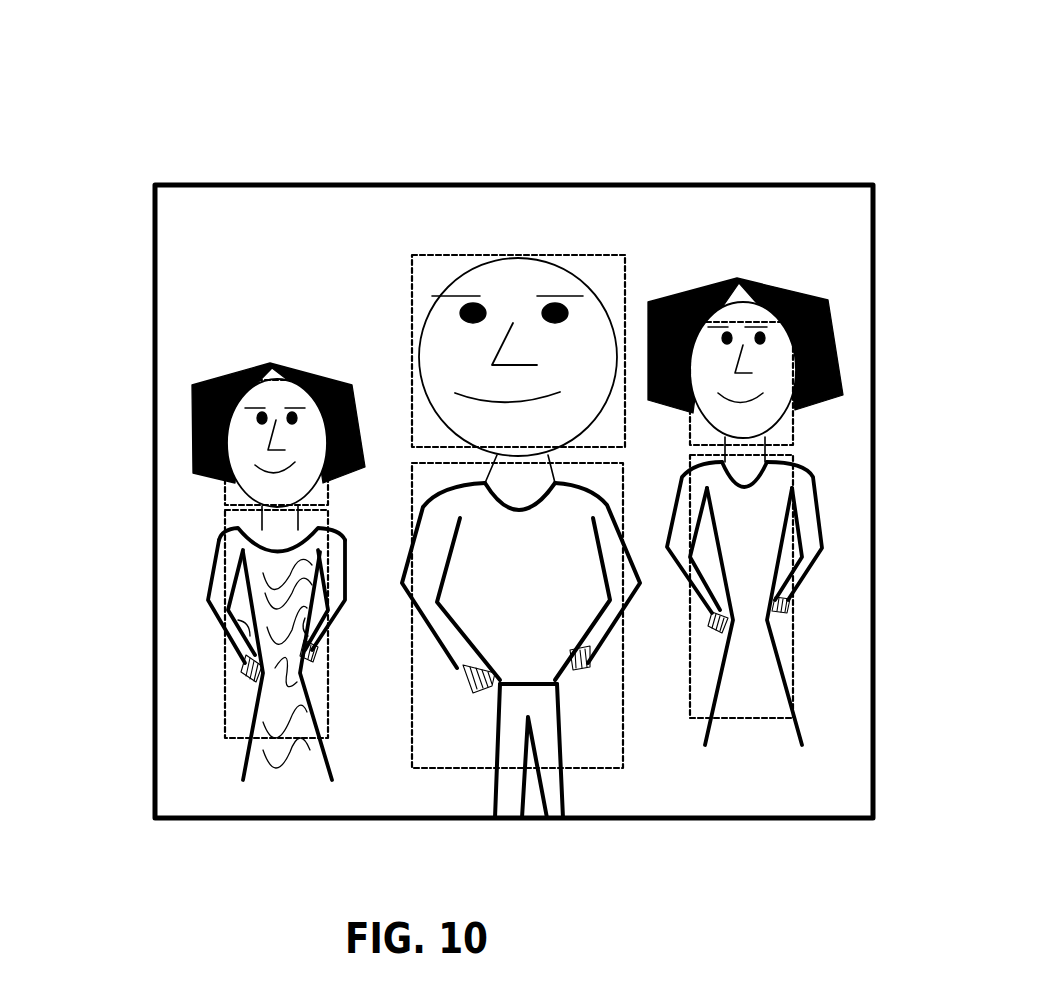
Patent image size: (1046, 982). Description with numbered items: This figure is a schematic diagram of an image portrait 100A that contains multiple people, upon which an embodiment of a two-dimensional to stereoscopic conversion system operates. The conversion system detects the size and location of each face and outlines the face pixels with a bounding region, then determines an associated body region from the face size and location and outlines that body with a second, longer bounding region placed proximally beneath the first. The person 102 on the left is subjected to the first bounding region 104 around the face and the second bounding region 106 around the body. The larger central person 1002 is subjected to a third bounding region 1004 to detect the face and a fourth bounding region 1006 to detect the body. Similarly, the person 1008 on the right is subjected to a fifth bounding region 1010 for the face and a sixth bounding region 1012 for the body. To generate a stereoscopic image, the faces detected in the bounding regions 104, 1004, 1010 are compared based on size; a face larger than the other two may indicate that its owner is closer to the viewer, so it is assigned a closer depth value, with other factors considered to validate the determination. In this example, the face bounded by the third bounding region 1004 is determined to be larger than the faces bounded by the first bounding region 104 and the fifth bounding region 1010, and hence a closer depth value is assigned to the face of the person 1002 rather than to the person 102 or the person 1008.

The image portrait 100A is at (662, 91).
The figure 102 is at (213, 565).
The first bounding region 104 is at (223, 498).
The second bounding region 106 is at (225, 683).
The figure 1002 is at (640, 587).
The third bounding region 1004 is at (410, 257).
The fourth bounding region 1006 is at (623, 742).
The figure 1008 is at (822, 550).
The fifth bounding region 1010 is at (792, 433).
The sixth bounding region 1012 is at (793, 673).